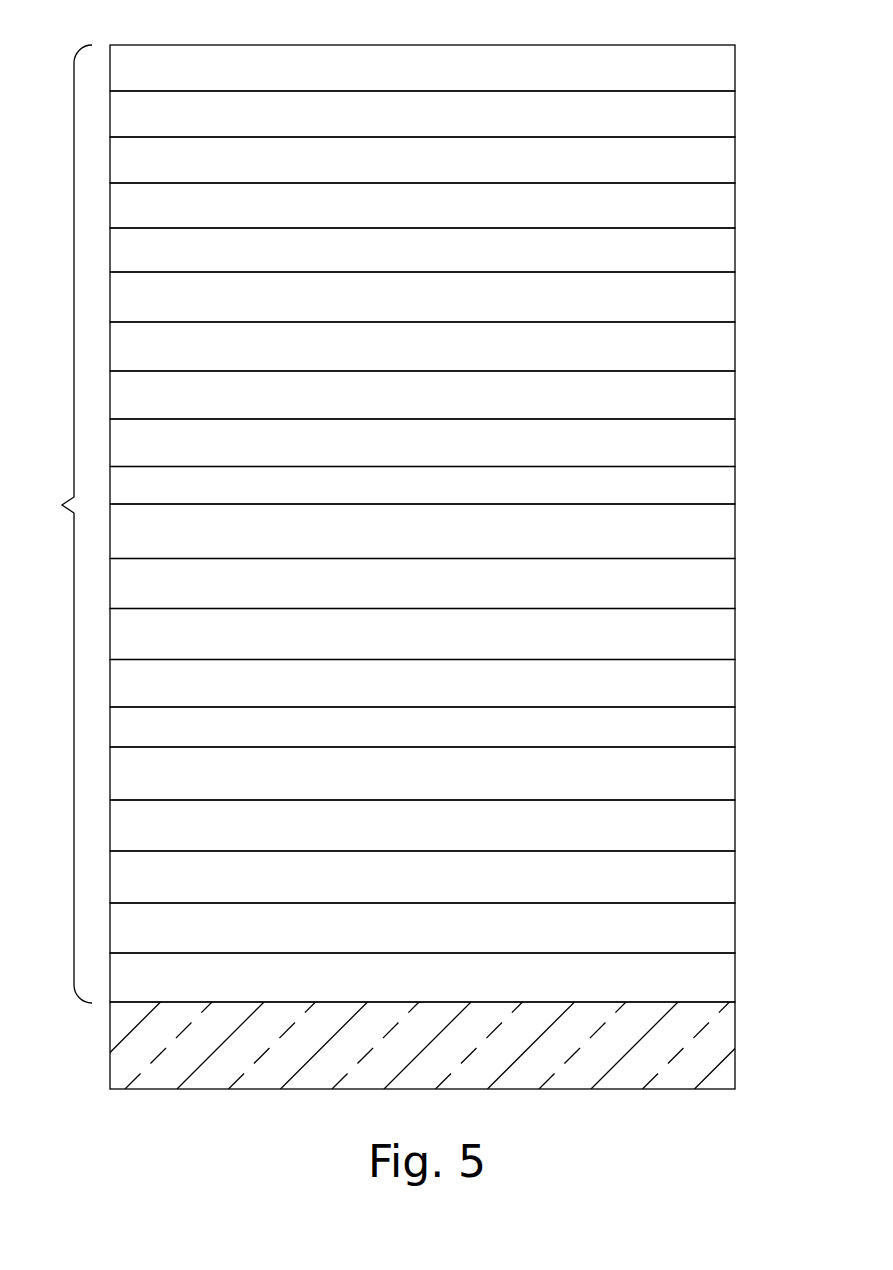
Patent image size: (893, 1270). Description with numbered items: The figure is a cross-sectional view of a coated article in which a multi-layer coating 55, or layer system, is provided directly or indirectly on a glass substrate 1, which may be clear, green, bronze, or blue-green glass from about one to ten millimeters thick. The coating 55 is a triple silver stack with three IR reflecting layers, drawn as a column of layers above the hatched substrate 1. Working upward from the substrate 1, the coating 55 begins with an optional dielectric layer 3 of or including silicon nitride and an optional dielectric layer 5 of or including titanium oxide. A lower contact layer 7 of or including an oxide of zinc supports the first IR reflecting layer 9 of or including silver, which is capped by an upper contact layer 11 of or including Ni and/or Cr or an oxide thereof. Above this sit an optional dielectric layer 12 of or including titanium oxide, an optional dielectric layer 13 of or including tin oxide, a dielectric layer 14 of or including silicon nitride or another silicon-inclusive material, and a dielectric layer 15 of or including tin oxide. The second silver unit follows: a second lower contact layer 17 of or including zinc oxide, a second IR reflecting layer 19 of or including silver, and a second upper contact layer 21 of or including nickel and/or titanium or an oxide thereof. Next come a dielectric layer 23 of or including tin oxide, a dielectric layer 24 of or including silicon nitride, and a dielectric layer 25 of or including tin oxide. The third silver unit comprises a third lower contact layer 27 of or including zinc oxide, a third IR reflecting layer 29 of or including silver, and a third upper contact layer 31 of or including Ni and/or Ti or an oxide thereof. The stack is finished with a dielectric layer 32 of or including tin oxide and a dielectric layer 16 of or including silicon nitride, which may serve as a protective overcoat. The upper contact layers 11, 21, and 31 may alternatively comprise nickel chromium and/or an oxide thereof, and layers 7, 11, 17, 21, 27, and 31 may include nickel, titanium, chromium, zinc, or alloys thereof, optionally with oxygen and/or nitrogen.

The glass substrate 1 is at (714, 1040).
The dielectric layer 3 is at (714, 977).
The dielectric layer 5 is at (714, 928).
The lower contact layer 7 is at (714, 877).
The IR reflecting layer 9 is at (714, 825).
The upper contact layer 11 is at (714, 773).
The dielectric layer 12 is at (714, 727).
The dielectric layer 13 is at (714, 683).
The dielectric layer 14 is at (714, 634).
The dielectric layer 15 is at (714, 583).
The dielectric layer 16 is at (714, 68).
The second lower contact layer 17 is at (714, 531).
The second IR reflecting layer 19 is at (714, 485).
The second upper contact layer 21 is at (714, 443).
The dielectric layer 23 is at (714, 395).
The dielectric layer 24 is at (714, 346).
The dielectric layer 25 is at (714, 297).
The third lower contact layer 27 is at (714, 250).
The third IR reflecting layer 29 is at (714, 205).
The third upper contact layer 31 is at (714, 160).
The dielectric layer 32 is at (714, 114).
The multi-layer coating 55 is at (60, 524).